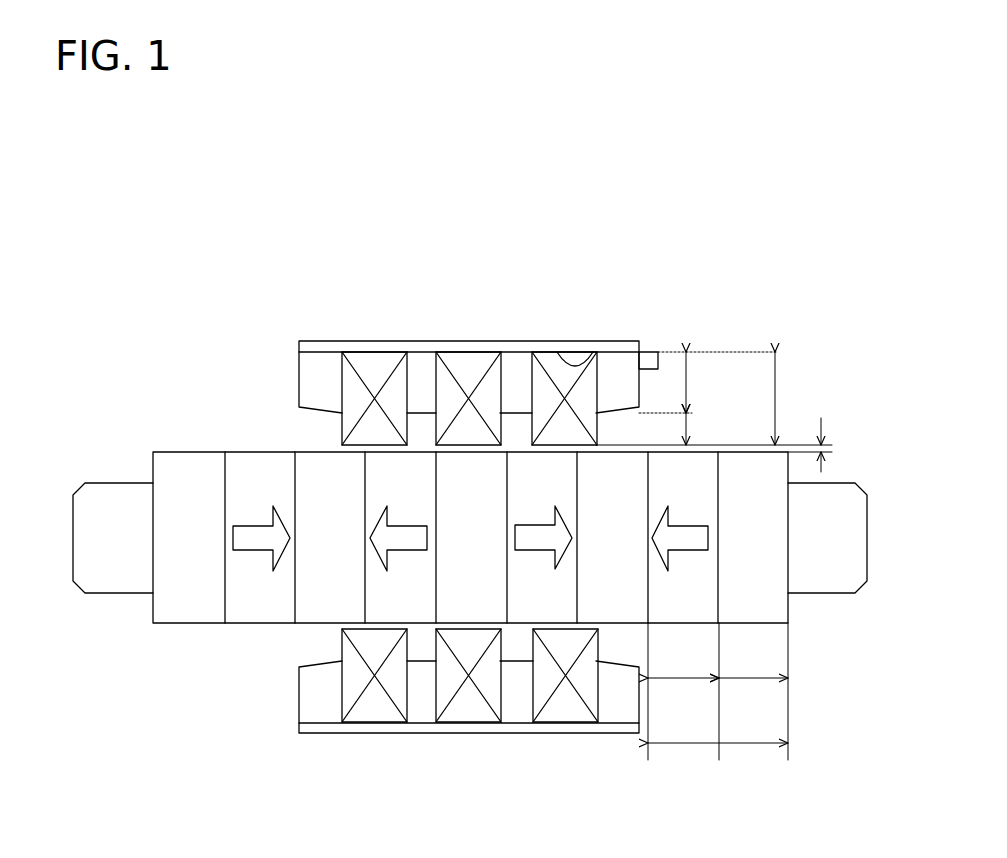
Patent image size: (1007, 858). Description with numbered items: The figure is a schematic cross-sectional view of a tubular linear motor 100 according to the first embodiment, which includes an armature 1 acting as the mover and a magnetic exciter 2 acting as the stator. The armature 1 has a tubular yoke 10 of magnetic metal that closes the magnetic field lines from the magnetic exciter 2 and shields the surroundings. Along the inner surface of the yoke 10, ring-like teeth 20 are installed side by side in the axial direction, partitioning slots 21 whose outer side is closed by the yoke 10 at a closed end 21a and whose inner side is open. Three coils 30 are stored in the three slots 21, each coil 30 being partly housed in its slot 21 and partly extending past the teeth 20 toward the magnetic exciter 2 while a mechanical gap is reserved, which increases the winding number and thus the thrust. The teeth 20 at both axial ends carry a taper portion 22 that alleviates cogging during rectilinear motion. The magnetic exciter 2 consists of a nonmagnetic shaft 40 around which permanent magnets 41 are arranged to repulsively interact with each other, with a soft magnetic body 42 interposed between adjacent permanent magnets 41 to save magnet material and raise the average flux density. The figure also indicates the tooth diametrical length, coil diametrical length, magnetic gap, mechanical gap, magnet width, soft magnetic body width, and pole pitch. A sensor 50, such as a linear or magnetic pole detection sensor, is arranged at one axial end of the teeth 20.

The tubular linear motor 100 is at (194, 205).
The armature 1 is at (453, 338).
The magnetic exciter 2 is at (255, 448).
The yoke 10 is at (538, 340).
The teeth 20 is at (423, 363).
The slot 21 is at (478, 693).
The closed end of the slot 21a is at (581, 366).
The taper portion 22 is at (330, 663).
The coil 30 is at (458, 370).
The shaft 40 is at (98, 510).
The permanent magnet 41 is at (373, 595).
The soft magnetic body 42 is at (633, 568).
The sensor 50 is at (647, 360).